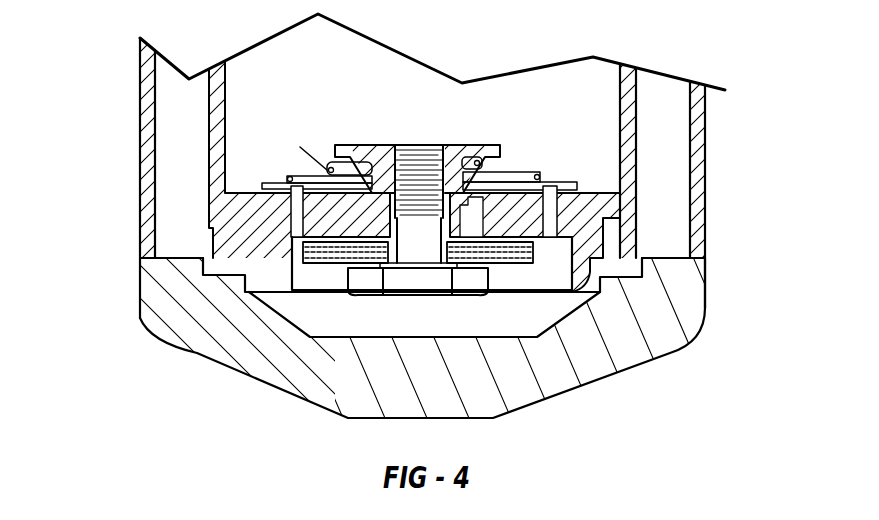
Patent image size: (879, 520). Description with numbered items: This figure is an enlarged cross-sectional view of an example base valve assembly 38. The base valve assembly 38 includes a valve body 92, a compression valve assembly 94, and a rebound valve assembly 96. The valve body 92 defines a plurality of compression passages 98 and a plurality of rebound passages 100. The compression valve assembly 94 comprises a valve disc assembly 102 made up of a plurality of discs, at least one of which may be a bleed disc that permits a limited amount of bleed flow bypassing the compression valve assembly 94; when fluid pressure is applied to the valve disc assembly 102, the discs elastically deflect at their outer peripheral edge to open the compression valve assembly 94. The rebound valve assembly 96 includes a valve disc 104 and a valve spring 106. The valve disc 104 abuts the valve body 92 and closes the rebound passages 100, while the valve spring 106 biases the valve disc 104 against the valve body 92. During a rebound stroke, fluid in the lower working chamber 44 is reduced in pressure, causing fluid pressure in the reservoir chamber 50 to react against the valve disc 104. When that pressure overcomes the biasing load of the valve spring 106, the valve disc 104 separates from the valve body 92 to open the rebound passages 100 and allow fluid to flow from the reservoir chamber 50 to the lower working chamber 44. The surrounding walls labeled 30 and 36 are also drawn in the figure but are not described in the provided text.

The inner wall 30 is at (627, 85).
The outer wall 36 is at (139, 68).
The base valve assembly 38 is at (655, 282).
The lower working chamber 44 is at (321, 73).
The reservoir chamber 50 is at (652, 120).
The valve body 92 is at (618, 240).
The compression valve assembly 94 is at (318, 283).
The rebound valve assembly 96 is at (532, 145).
The compression passages 98 is at (495, 213).
The rebound passages 100 is at (293, 198).
The valve disc assembly 102 is at (295, 255).
The valve disc 104 is at (300, 197).
The valve spring 106 is at (300, 150).